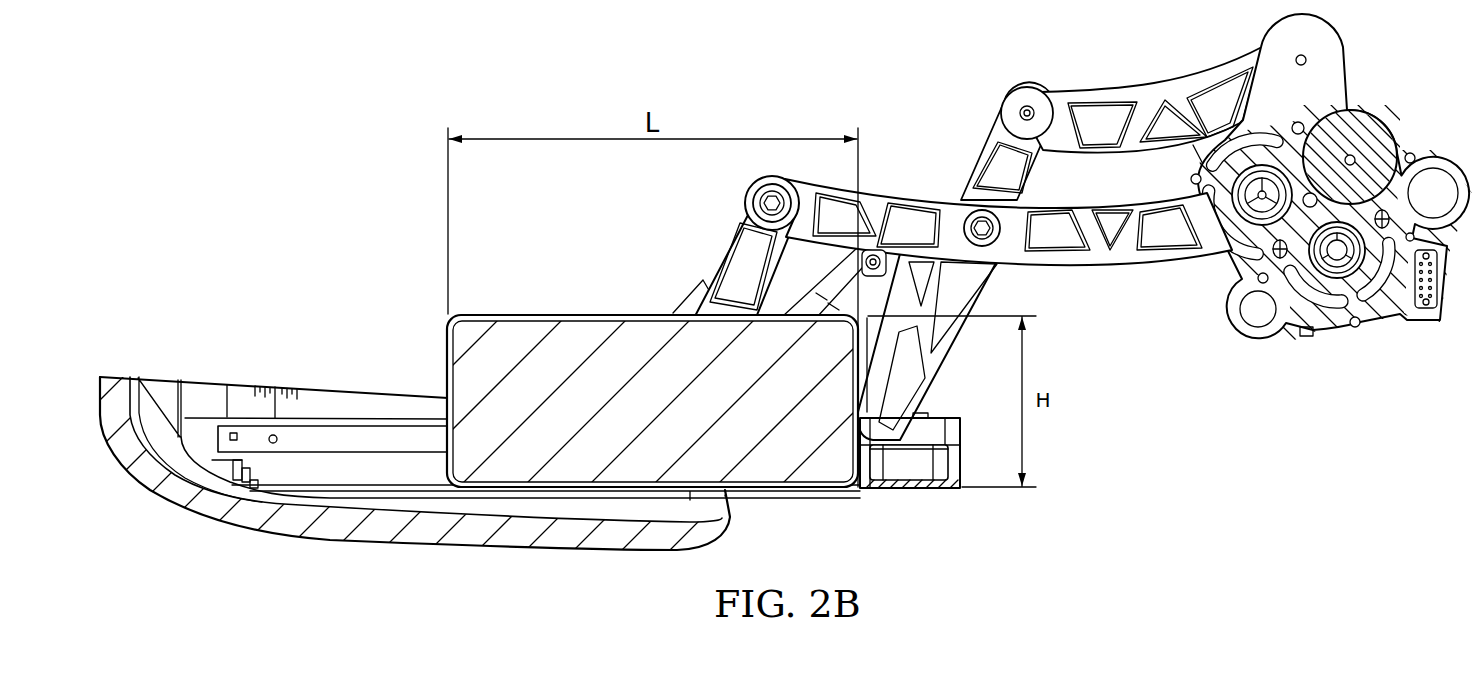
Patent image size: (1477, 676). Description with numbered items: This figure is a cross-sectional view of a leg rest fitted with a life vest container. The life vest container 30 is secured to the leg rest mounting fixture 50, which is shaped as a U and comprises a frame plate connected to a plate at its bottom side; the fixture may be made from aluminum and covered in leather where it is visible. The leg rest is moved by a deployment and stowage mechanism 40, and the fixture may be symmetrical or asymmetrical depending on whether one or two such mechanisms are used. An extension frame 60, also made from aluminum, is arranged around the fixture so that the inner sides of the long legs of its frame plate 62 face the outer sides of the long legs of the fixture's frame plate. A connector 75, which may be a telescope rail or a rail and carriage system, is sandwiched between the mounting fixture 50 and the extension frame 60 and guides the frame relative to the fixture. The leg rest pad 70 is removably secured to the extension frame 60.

The life vest container 30 is at (577, 316).
The deployment and stowage mechanism 40 is at (903, 101).
The mounting fixture 50 is at (915, 497).
The extension frame 60 is at (247, 405).
The frame plate 62 is at (352, 492).
The leg rest pad 70 is at (285, 522).
The connector 75 is at (324, 424).